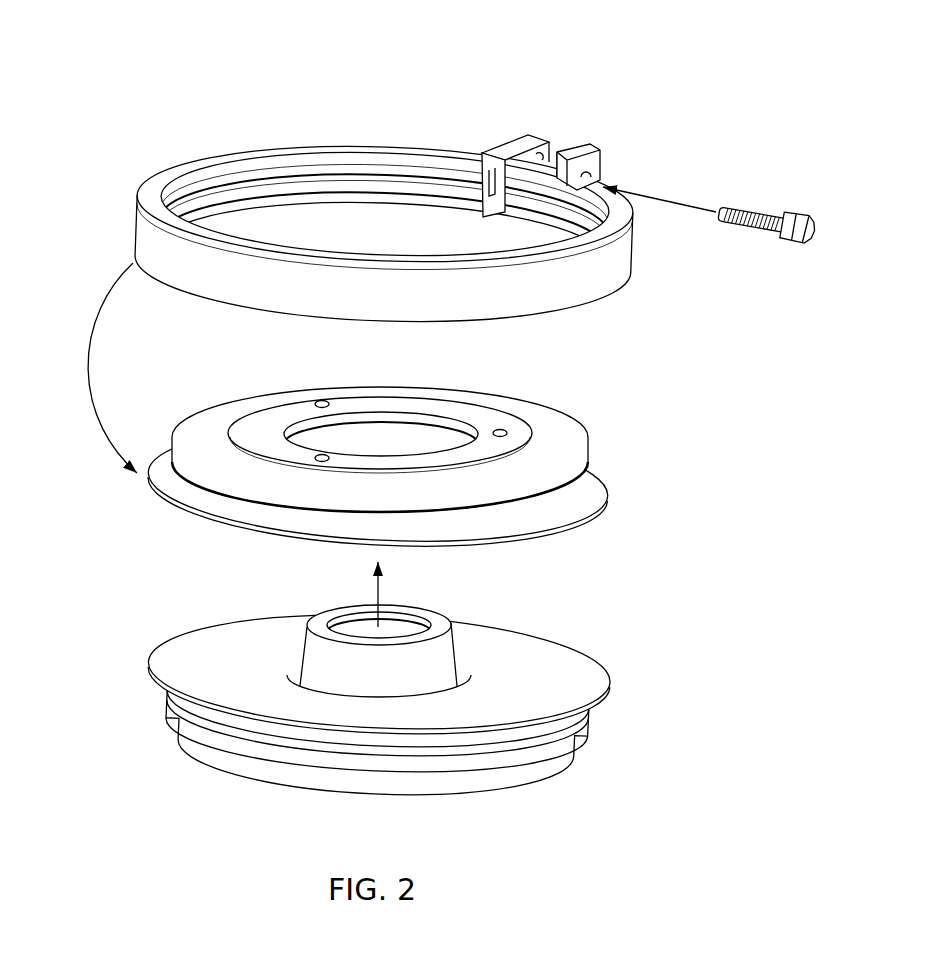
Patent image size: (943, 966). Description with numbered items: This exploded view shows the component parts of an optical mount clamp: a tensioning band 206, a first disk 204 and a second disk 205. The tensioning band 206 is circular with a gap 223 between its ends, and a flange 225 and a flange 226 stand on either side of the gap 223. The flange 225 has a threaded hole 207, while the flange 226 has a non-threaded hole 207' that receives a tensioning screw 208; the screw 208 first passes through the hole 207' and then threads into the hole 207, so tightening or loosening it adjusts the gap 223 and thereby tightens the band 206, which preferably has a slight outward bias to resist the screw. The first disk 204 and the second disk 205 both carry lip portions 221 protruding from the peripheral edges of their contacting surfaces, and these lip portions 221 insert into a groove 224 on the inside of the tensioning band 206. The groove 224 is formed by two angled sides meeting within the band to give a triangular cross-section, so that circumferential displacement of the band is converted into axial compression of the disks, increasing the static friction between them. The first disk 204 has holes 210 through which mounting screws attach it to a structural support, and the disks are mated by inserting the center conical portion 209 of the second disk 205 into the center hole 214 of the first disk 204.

The first disk 204 is at (600, 458).
The second disk 205 is at (165, 710).
The tensioning band 206 is at (133, 221).
The threaded hole 207 is at (477, 86).
The non-threaded hole 207' is at (693, 144).
The tensioning screw 208 is at (747, 227).
The center conical portion 209 is at (443, 657).
The holes 210 is at (314, 455).
The center hole 214 is at (355, 432).
The lip portions 221 is at (617, 499).
The gap 223 is at (587, 138).
The groove 224 is at (446, 181).
The flange 225 is at (502, 140).
The flange 226 is at (607, 148).